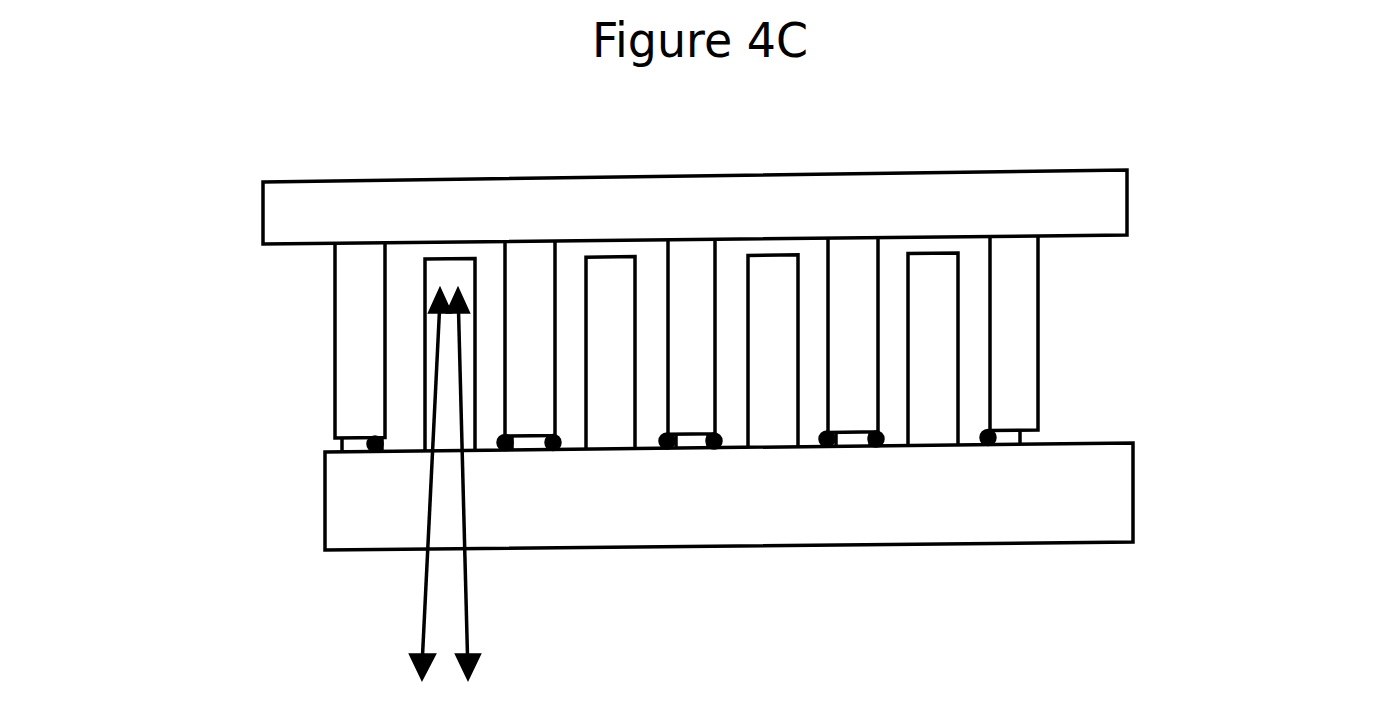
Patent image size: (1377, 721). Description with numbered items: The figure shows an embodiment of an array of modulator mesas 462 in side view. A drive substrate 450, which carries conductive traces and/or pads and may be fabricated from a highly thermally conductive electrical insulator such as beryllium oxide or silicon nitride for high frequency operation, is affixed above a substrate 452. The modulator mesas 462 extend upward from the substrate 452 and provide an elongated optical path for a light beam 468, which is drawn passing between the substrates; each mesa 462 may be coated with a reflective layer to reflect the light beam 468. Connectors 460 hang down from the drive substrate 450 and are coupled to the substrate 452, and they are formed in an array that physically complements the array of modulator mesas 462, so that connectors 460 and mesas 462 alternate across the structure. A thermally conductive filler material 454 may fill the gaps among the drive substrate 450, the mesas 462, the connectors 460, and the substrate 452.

The drive substrate 450 is at (1127, 170).
The substrate 452 is at (325, 500).
The thermally conductive filler material 454 is at (408, 355).
The connectors 460 is at (538, 290).
The modulator mesas 462 is at (932, 300).
The light beam 468 is at (468, 613).